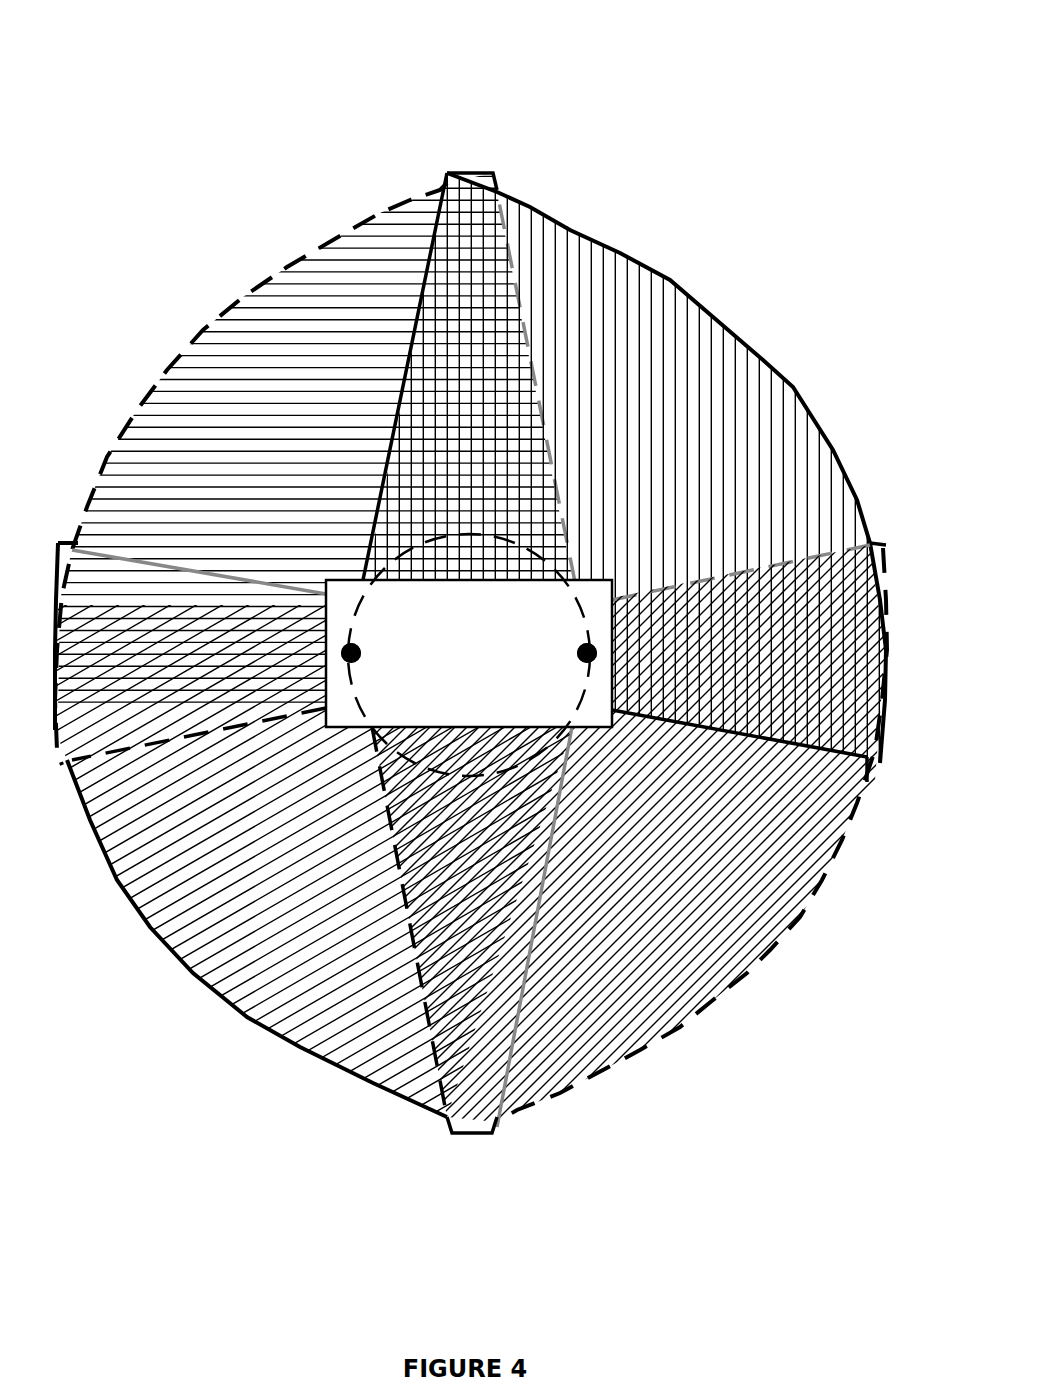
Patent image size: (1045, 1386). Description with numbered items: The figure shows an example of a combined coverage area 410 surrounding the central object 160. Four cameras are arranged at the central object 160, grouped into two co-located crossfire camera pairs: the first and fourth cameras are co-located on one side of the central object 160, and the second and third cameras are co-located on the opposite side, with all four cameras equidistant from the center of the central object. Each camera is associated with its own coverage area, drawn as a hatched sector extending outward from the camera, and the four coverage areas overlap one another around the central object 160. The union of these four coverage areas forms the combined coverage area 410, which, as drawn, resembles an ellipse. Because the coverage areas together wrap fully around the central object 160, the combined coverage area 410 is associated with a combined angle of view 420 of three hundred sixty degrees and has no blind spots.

The combined coverage area 410 is at (728, 84).
The combined angle of view 420 is at (498, 522).
The central object 160 is at (469, 653).